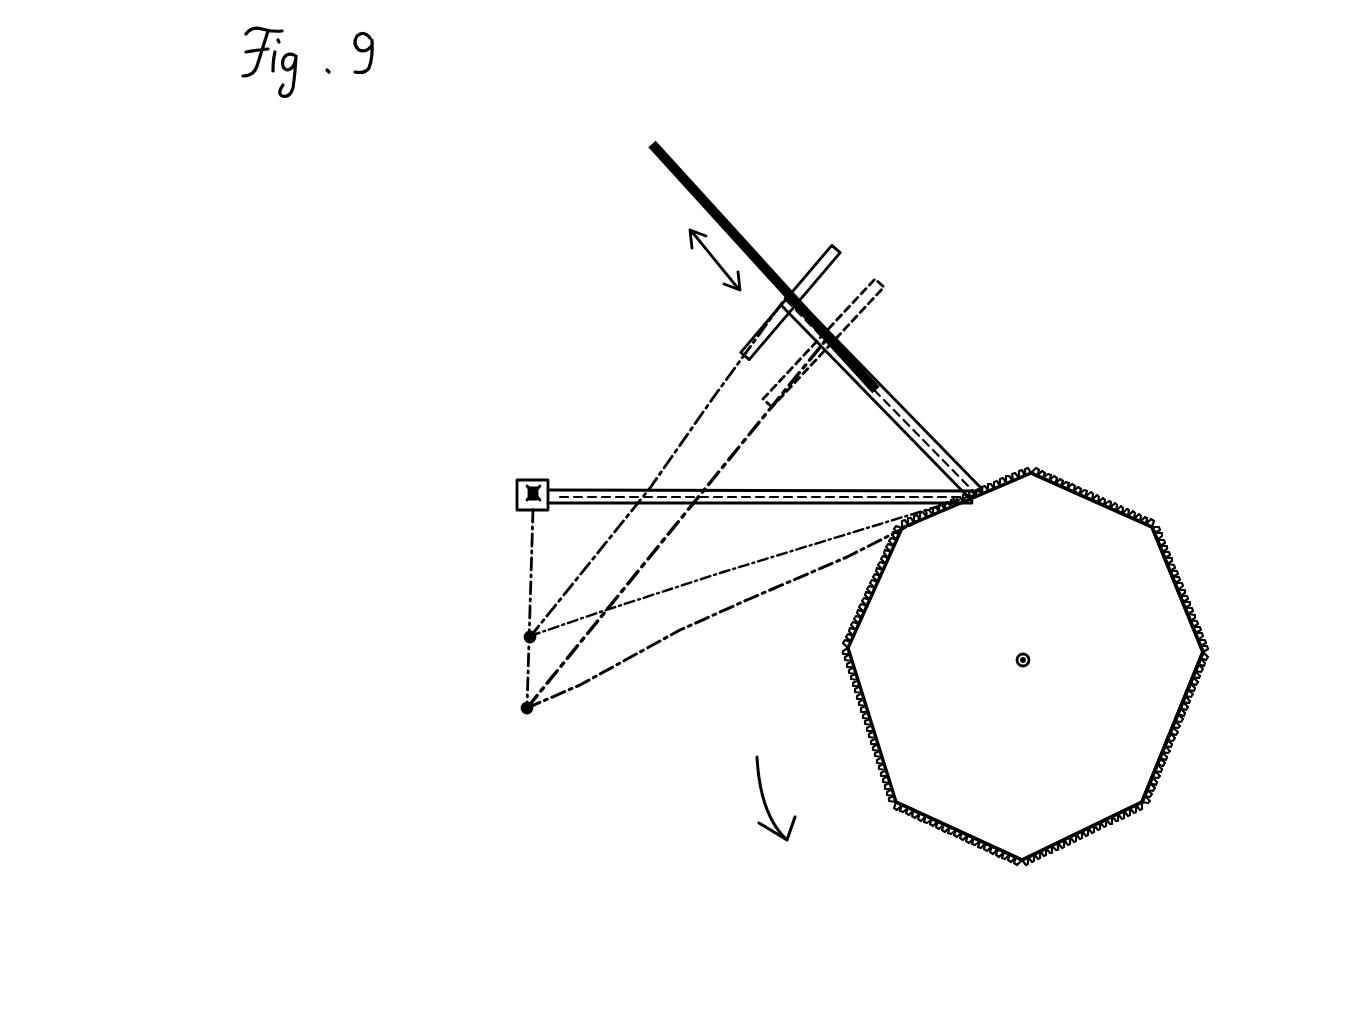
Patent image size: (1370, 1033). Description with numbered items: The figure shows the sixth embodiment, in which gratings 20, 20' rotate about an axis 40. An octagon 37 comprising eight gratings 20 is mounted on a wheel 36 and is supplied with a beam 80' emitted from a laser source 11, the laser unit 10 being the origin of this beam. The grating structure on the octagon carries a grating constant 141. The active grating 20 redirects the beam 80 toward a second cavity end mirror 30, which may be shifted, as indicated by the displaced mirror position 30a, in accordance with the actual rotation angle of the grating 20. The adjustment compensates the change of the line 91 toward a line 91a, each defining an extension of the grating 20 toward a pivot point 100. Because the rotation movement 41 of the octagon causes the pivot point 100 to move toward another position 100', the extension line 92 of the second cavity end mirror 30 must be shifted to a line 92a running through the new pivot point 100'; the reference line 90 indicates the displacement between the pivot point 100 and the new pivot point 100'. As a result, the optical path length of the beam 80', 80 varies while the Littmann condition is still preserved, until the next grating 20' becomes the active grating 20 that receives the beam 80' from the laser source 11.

The laser unit 10 is at (517, 490).
The laser source 11 is at (527, 480).
The grating 20 is at (1025, 616).
The next grating 20' is at (1164, 680).
The second cavity end mirror 30 is at (817, 250).
The displaced light pointer 30a is at (857, 283).
The wheel 36 is at (1145, 753).
The octagon 37 is at (990, 813).
The rotation axis 40 is at (1020, 667).
The rotation movement 41 is at (757, 788).
The redirected beam 80 is at (817, 322).
The emitted beam 80' is at (765, 466).
The reference line 90 is at (527, 565).
The line 91 is at (768, 558).
The shifted line 91a is at (688, 631).
The extension line of second cavity end mirror 92 is at (652, 484).
The shifted extension line 92a is at (740, 397).
The pivot point 100 is at (484, 651).
The new pivot point 100' is at (476, 727).
The grating constant 141 is at (988, 511).